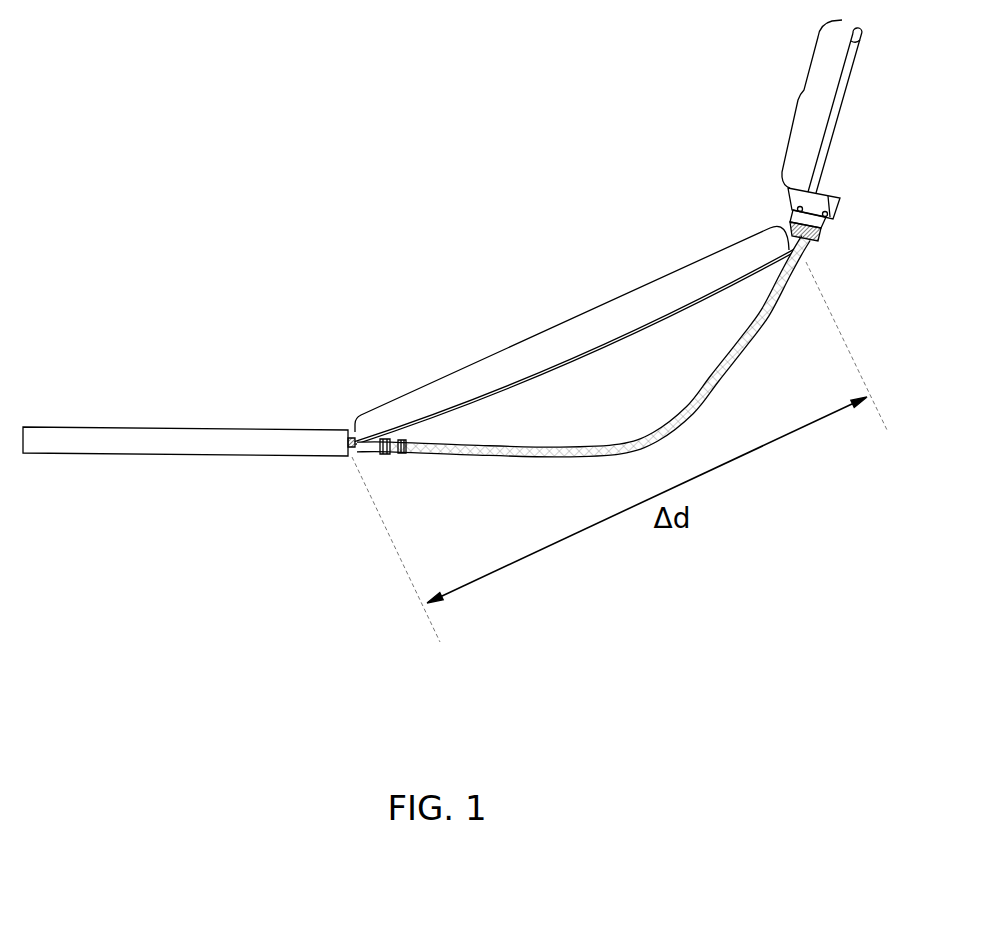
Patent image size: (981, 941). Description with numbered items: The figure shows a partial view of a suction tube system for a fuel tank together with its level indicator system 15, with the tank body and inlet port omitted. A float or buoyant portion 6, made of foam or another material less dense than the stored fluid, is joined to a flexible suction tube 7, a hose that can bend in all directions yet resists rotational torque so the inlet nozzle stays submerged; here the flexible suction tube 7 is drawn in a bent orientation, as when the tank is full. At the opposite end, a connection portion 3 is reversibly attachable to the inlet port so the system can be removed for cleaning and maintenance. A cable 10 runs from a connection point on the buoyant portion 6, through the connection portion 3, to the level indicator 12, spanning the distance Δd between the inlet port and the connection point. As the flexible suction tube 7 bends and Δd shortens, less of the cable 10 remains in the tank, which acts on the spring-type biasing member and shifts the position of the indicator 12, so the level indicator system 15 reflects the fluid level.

The connection portion 3 is at (822, 233).
The float or buoyant portion 6 is at (178, 427).
The flexible suction tube 7 is at (636, 431).
The cable 10 is at (580, 356).
The level indicator 12 is at (720, 289).
The level indicator system 15 is at (573, 317).